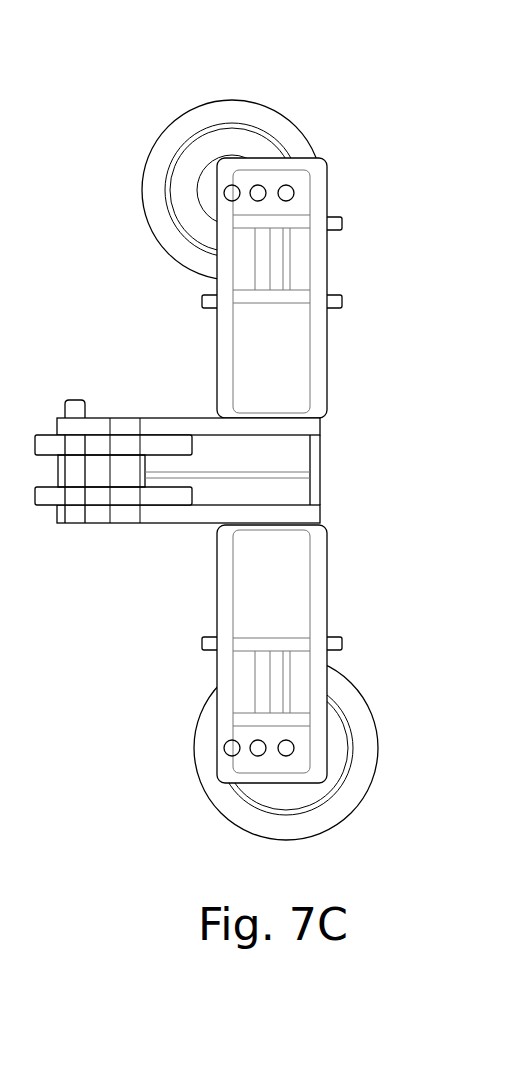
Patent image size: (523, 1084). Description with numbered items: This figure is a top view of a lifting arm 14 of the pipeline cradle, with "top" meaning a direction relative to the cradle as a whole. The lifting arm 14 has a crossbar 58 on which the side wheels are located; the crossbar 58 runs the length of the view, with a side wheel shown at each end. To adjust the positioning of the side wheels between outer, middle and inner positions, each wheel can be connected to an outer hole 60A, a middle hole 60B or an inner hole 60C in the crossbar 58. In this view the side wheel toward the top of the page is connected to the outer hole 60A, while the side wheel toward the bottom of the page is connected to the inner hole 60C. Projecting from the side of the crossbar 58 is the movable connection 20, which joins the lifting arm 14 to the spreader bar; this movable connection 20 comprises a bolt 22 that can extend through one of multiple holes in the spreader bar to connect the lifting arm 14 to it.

The lifting arm 14 is at (204, 436).
The crossbar 58 is at (296, 352).
The outer hole 60A is at (232, 185).
The middle hole 60B is at (258, 185).
The inner hole 60C is at (286, 185).
The movable connection 20 is at (167, 424).
The bolt 22 is at (78, 400).